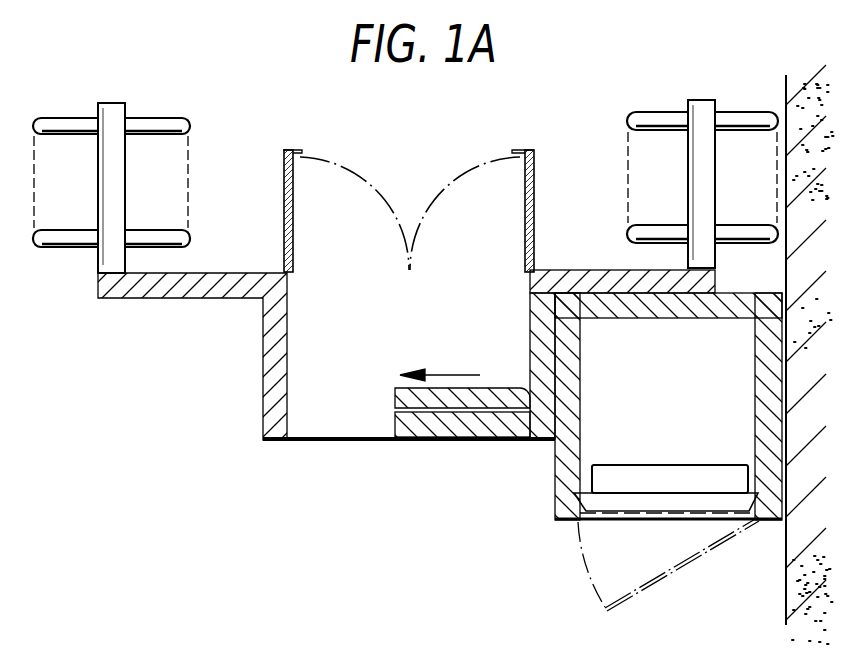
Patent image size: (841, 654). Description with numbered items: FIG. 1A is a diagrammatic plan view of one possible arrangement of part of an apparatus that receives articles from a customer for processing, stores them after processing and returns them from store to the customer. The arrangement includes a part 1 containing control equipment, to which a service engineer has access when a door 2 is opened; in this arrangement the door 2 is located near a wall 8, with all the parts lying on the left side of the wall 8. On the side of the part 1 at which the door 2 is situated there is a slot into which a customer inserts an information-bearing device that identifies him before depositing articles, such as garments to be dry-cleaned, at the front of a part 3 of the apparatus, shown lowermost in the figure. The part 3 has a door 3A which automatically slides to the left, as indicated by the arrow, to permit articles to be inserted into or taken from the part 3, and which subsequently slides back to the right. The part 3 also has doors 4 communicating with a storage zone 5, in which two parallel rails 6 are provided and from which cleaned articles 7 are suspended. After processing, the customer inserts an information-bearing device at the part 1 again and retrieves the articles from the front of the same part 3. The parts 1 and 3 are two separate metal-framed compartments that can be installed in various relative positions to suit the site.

The part containing control equipment 1 is at (671, 401).
The door 2 is at (703, 523).
The part for depositing and retrieving articles 3 is at (322, 345).
The door 3A is at (493, 400).
The doors 4 is at (298, 166).
The storage zone 5 is at (430, 117).
The parallel rails 6 is at (117, 202).
The cleaned articles 7 is at (188, 121).
The wall 8 is at (788, 558).